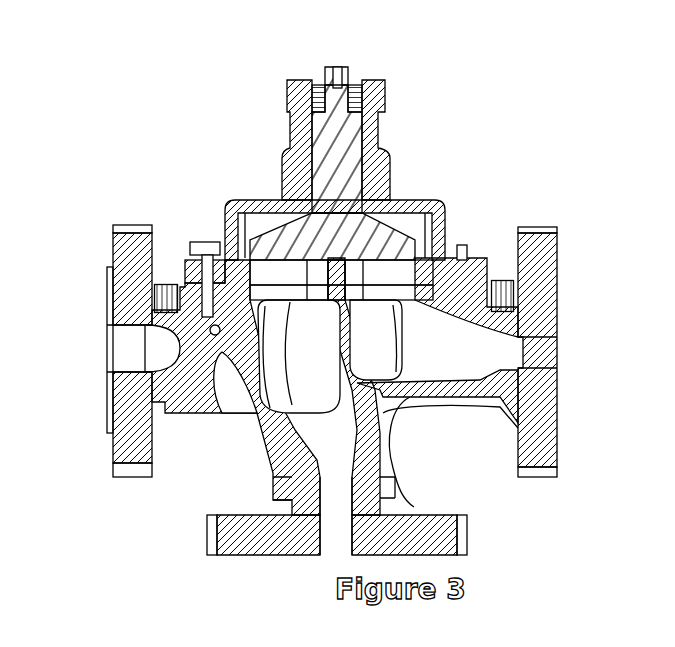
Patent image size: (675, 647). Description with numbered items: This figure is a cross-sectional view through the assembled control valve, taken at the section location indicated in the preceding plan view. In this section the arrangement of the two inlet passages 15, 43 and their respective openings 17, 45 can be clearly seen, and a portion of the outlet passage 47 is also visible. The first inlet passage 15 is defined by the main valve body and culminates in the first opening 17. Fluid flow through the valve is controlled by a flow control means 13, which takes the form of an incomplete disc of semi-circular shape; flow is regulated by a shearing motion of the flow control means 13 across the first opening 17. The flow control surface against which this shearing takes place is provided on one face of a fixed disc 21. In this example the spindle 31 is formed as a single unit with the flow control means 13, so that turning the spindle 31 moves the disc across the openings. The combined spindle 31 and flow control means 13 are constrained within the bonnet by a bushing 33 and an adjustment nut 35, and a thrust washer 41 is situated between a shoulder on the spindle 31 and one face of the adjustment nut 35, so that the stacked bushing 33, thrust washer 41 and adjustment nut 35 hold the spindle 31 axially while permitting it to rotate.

The flow control means 13 is at (420, 257).
The first inlet passage 15 is at (540, 352).
The first opening 17 is at (390, 268).
The fixed disc 21 is at (455, 257).
The spindle 31 is at (348, 68).
The bushing 33 is at (365, 134).
The adjustment nut 35 is at (365, 96).
The thrust washer 41 is at (377, 106).
The inlet passage 43 is at (332, 533).
The opening 45 is at (228, 230).
The outlet passage 47 is at (123, 342).